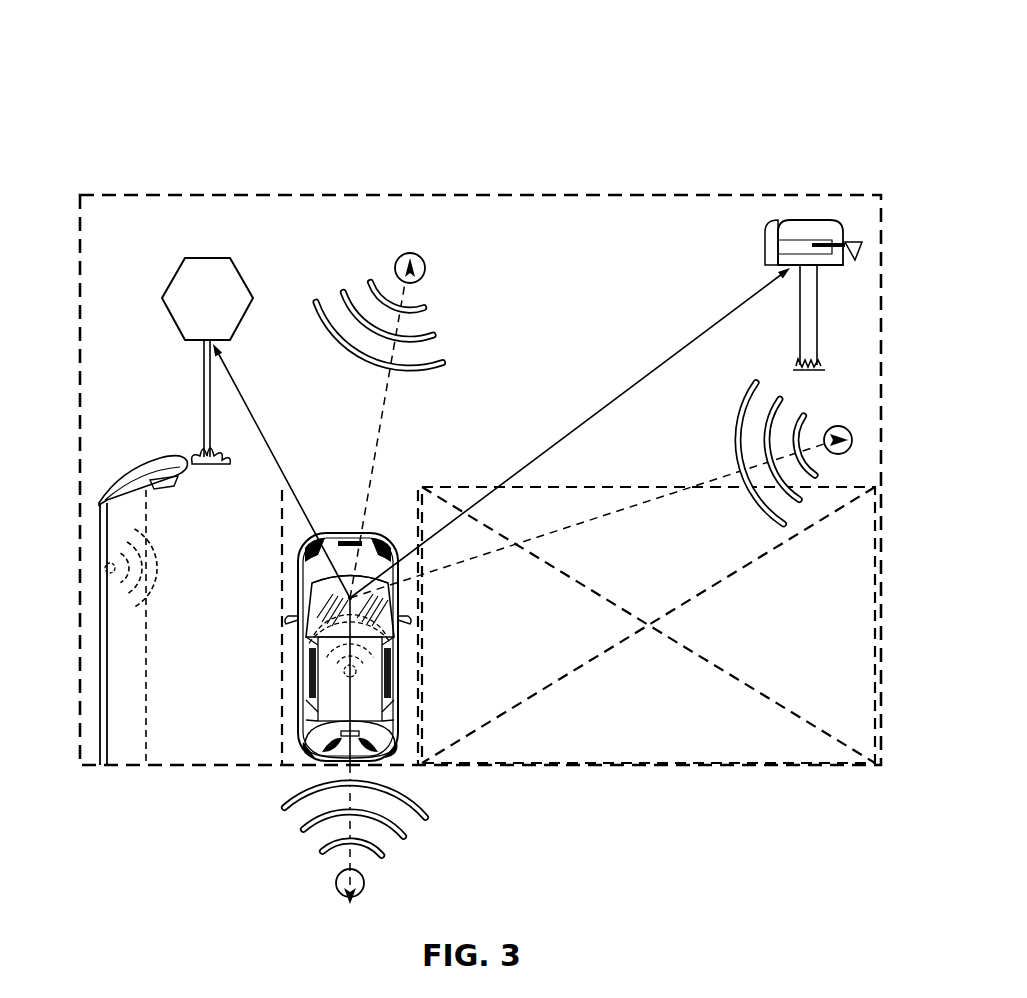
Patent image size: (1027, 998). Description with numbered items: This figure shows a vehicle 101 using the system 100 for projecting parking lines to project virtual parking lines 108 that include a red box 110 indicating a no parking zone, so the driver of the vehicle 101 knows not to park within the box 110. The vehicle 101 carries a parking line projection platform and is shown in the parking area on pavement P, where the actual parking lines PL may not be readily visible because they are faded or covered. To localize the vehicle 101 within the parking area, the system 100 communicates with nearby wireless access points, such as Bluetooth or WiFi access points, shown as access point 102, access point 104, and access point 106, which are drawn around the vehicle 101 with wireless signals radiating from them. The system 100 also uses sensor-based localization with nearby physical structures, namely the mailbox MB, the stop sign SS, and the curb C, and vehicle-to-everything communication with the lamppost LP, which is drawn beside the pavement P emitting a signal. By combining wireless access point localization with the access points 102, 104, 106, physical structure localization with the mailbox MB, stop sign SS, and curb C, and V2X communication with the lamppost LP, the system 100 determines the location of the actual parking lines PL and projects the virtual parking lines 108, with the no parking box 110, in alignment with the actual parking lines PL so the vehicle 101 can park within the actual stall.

The system for projecting parking lines 100 is at (134, 51).
The vehicle 101 is at (300, 735).
The access point 102 is at (364, 880).
The access point 104 is at (852, 437).
The access point 106 is at (412, 253).
The virtual parking lines 108 is at (280, 688).
The red box 110 is at (872, 675).
The curb C is at (388, 768).
The stop sign SS is at (162, 298).
The mailbox MB is at (808, 220).
The lamppost LP is at (100, 570).
The actual parking lines PL is at (144, 694).
The pavement P is at (166, 707).